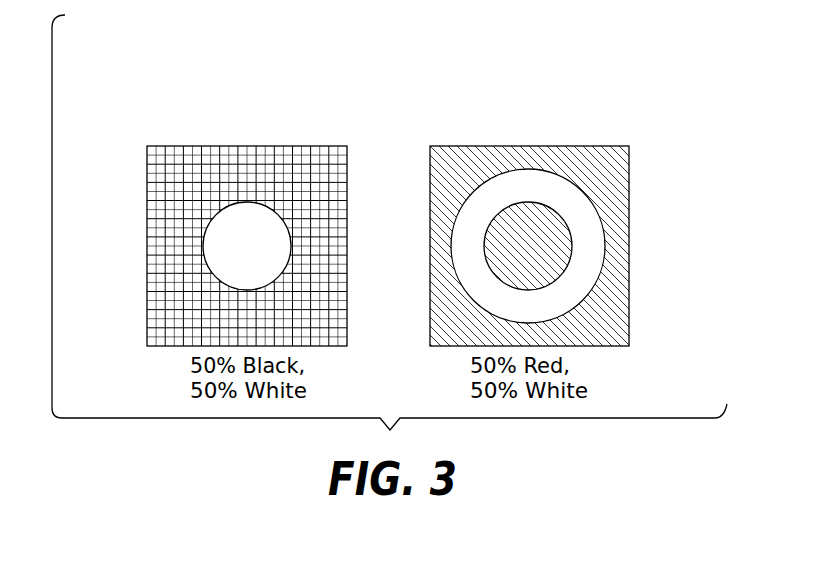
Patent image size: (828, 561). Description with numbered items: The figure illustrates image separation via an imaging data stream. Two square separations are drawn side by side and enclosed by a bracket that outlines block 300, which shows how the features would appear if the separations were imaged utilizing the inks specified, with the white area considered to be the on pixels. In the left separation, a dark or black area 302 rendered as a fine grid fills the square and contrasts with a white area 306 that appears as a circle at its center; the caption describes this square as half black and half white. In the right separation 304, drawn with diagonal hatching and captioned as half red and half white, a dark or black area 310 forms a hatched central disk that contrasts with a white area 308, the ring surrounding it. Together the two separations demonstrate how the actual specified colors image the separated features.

The block 300 is at (608, 54).
The dark or black area 302 is at (277, 146).
The second region with 50% red / 50% white hatch pattern 304 is at (497, 146).
The white area 306 is at (246, 246).
The white area 308 is at (578, 208).
The dark or black area 310 is at (543, 246).